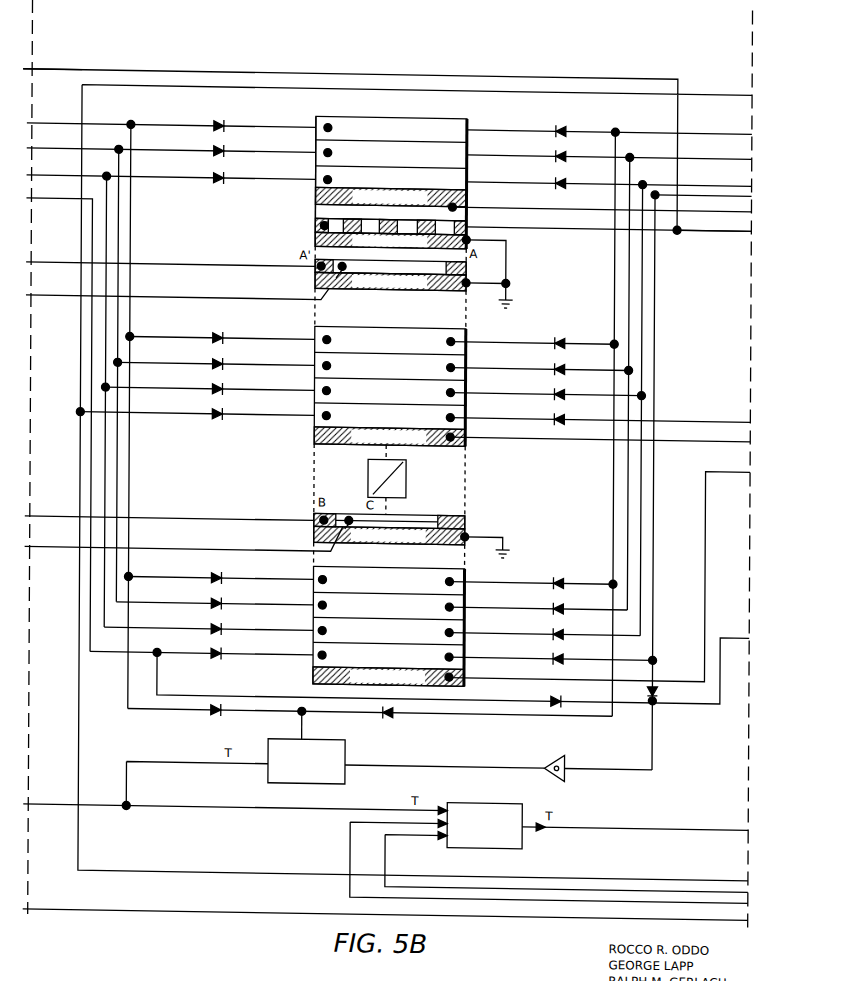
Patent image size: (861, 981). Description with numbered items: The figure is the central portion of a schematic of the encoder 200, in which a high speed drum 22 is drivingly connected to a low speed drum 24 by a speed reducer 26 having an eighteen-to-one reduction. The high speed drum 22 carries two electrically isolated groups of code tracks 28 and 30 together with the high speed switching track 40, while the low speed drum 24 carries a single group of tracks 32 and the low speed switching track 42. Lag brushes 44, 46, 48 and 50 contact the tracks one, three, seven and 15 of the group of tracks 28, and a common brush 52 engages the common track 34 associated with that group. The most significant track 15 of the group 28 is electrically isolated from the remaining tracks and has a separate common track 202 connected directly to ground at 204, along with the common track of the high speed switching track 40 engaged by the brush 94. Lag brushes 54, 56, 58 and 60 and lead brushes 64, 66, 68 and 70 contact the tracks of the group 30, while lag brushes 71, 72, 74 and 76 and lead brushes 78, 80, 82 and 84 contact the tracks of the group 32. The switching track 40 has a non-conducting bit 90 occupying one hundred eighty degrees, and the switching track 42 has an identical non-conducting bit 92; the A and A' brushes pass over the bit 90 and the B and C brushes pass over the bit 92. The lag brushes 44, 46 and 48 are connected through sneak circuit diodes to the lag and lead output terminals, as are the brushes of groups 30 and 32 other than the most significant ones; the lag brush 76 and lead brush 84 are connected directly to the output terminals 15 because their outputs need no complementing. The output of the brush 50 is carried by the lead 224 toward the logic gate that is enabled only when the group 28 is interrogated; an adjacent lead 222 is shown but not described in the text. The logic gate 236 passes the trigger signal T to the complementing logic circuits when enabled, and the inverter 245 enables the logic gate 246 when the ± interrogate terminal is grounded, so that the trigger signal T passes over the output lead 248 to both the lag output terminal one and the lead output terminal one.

The most significant track 15 is at (348, 216).
The high speed drum 22 is at (438, 98).
The low speed drum 24 is at (334, 688).
The speed reducer 26 is at (370, 478).
The group of code tracks 28 is at (310, 110).
The group of code tracks 30 is at (308, 425).
The group of code tracks 32 is at (308, 570).
The common track 34 is at (466, 197).
The high speed switching track 40 is at (316, 283).
The low speed switching track 42 is at (460, 510).
The lag brush 44 is at (330, 120).
The lag brush 46 is at (325, 147).
The lag brush 48 is at (325, 174).
The lag brush 50 is at (316, 222).
The common brush 52 is at (456, 203).
The lag brush 54 is at (325, 335).
The lag brush 56 is at (325, 361).
The lag brush 58 is at (325, 386).
The lag brush 60 is at (325, 411).
The lead brush 64 is at (456, 335).
The lead brush 66 is at (456, 361).
The lead brush 68 is at (456, 386).
The lead brush 70 is at (456, 411).
The lag brush 71 is at (328, 574).
The lag brush 72 is at (322, 600).
The lag brush 74 is at (322, 626).
The lag brush 76 is at (322, 650).
The lead brush 78 is at (456, 575).
The lead brush 80 is at (456, 600).
The lead brush 82 is at (456, 626).
The lead brush 84 is at (456, 650).
The non-conducting bit 90 is at (425, 270).
The non-conducting bit 92 is at (423, 510).
The brush 94 is at (469, 285).
The encoder 200 is at (511, 48).
The common track 202 is at (316, 237).
The ground 204 is at (512, 275).
The conductor 222 is at (672, 209).
The lead 224 is at (741, 224).
The logic gate 236 is at (490, 797).
The inverter 245 is at (557, 752).
The logic gate 246 is at (350, 773).
The output lead 248 is at (300, 727).